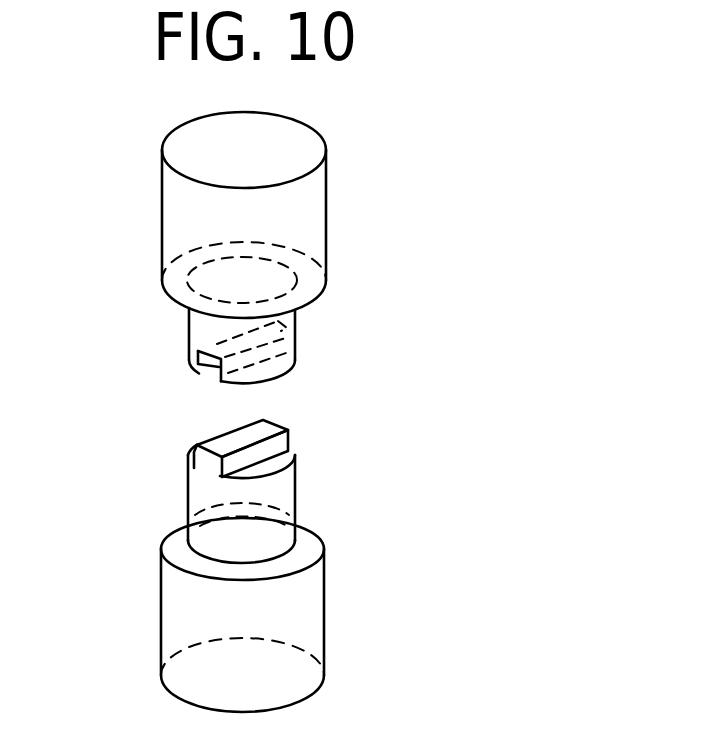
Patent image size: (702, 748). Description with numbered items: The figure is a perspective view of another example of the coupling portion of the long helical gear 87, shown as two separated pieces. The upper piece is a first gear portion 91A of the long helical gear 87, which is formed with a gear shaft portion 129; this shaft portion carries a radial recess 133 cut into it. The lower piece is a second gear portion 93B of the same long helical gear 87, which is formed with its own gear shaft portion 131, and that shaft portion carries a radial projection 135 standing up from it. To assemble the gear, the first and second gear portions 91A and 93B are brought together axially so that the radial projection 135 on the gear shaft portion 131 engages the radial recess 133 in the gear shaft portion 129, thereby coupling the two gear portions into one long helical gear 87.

The first gear portion 91A is at (340, 165).
The gear shaft portion 129 is at (172, 328).
The radial recess 133 is at (207, 367).
The gear shaft portion 131 is at (168, 485).
The radial projection 135 is at (289, 430).
The second gear portion 93B is at (338, 612).
The long helical gear 87 is at (476, 454).